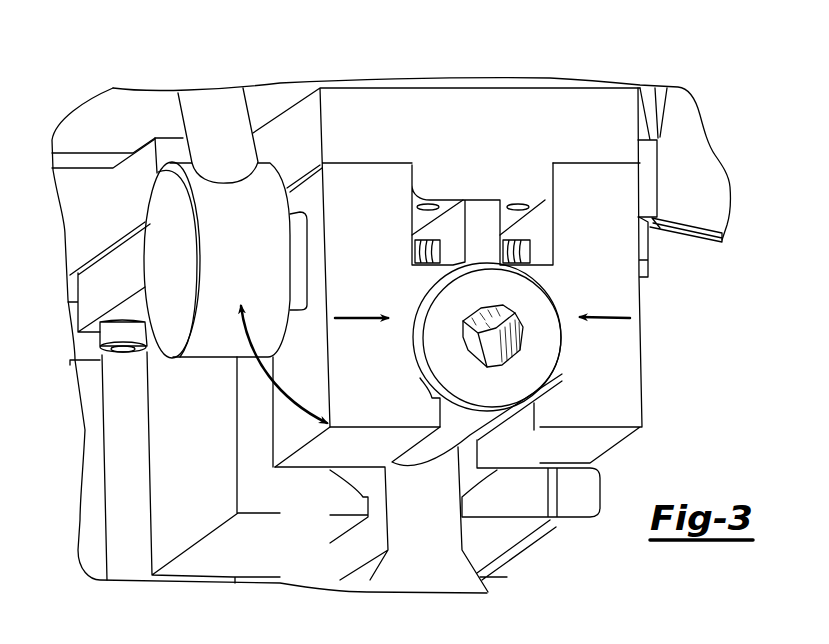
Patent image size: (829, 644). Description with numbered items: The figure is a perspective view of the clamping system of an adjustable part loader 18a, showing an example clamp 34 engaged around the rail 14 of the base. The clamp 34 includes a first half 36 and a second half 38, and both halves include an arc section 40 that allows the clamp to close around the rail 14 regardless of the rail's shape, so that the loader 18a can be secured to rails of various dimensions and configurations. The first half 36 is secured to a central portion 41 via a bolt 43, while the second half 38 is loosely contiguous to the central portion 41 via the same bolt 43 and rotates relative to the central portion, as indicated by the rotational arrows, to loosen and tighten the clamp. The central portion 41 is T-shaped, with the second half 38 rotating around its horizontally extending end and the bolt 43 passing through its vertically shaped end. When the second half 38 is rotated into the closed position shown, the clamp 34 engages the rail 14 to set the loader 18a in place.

The loader 18a is at (180, 415).
The first half 36 is at (363, 192).
The second half 38 is at (605, 197).
The central portion 41 is at (467, 183).
The bolt 43 is at (527, 250).
The arc section 40 is at (417, 317).
The clamp 34 is at (617, 330).
The rail 14 is at (538, 340).